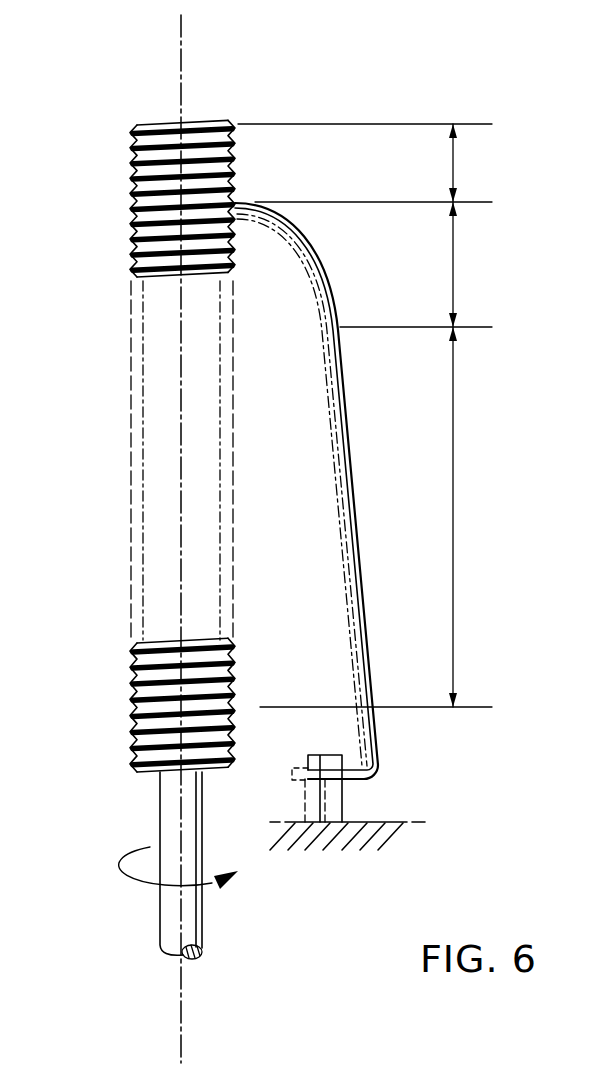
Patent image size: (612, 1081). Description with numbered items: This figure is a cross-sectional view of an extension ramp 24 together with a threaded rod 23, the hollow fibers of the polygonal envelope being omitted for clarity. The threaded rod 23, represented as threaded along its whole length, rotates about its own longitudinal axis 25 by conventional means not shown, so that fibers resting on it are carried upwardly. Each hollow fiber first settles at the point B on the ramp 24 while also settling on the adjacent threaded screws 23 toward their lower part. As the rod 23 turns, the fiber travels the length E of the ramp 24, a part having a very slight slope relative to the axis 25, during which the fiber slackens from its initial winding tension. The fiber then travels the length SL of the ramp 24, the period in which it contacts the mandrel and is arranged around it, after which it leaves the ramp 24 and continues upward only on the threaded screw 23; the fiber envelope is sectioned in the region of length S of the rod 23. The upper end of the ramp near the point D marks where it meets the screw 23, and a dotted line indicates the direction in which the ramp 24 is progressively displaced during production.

The threaded rod 23 is at (132, 194).
The extension ramp 24 is at (345, 493).
The longitudinal axis 25 is at (182, 48).
The length S of the threaded rods S is at (468, 164).
The length SL of the ramp SL is at (446, 272).
The length E of the ramp E is at (452, 522).
The point D (bend start) D is at (236, 201).
The point B is at (372, 708).